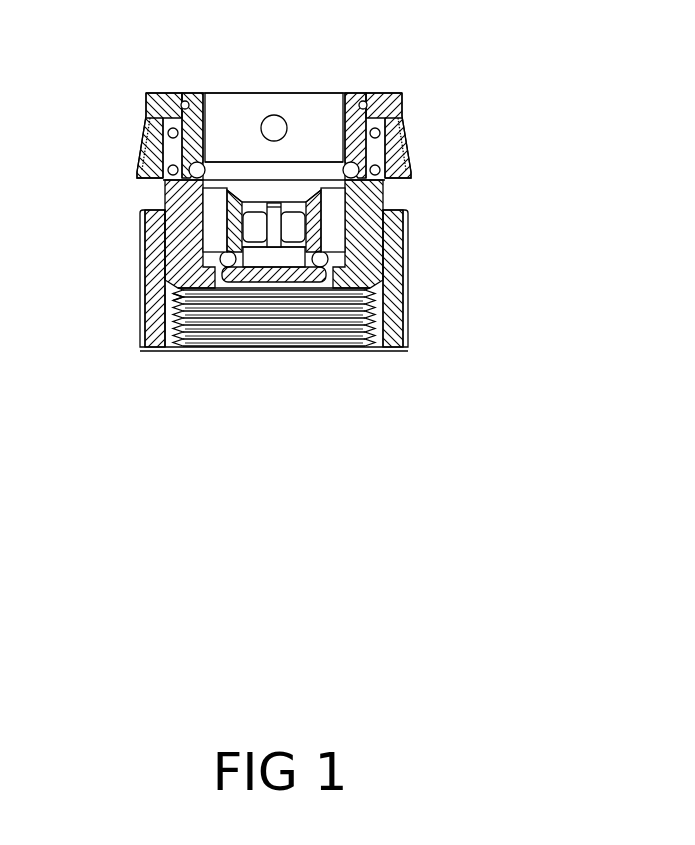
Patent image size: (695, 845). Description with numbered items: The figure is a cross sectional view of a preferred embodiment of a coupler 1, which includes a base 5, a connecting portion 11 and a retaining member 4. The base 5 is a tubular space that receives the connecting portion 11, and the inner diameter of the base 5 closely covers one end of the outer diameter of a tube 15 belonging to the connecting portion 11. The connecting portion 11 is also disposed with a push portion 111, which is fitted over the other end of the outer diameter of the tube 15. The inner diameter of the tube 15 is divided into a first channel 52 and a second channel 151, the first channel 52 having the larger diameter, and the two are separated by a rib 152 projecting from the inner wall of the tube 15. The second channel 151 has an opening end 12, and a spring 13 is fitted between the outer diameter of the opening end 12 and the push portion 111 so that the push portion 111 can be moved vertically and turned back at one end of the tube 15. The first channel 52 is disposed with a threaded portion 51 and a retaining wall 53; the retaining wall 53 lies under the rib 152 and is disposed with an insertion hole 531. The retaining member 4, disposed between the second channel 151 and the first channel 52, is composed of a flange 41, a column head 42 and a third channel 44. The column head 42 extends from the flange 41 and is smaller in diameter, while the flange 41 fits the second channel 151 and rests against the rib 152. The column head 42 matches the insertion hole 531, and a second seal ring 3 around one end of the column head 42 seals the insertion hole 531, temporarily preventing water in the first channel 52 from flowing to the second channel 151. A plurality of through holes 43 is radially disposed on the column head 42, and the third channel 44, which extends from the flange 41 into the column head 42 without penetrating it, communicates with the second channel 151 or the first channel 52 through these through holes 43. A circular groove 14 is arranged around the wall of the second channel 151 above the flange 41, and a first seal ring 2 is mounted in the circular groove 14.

The coupler 1 is at (547, 71).
The connecting portion 11 is at (109, 152).
The push portion 111 is at (148, 122).
The opening end 12 is at (348, 93).
The spring 13 is at (380, 150).
The circular groove 14 is at (165, 182).
The tube 15 is at (201, 244).
The second channel 151 is at (224, 127).
The rib 152 is at (330, 270).
The first seal ring 2 is at (190, 173).
The second seal ring 3 is at (306, 264).
The retaining member 4 is at (138, 243).
The flange 41 is at (350, 190).
The column head 42 is at (288, 257).
The through holes 43 is at (330, 232).
The third channel 44 is at (333, 253).
The base 5 is at (410, 320).
The threaded portion 51 is at (193, 337).
The first channel 52 is at (288, 348).
The retaining wall 53 is at (201, 282).
The insertion hole 531 is at (222, 297).